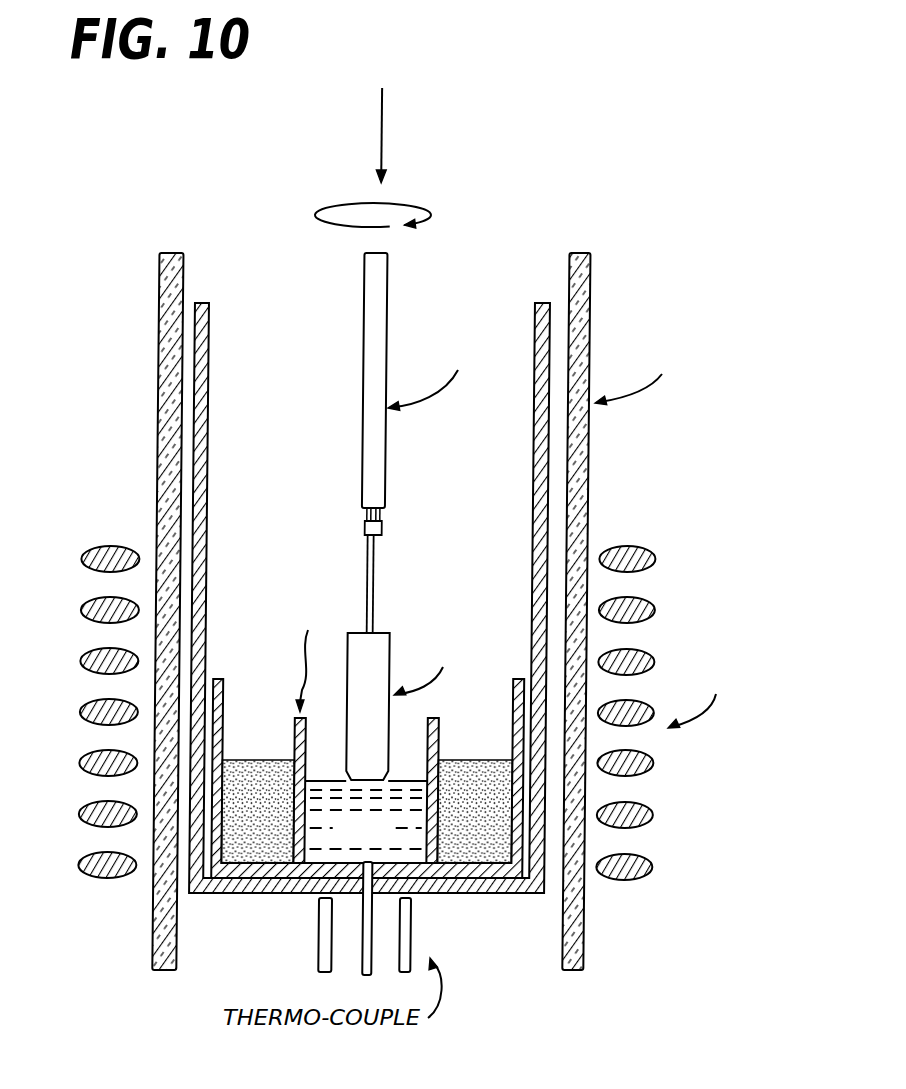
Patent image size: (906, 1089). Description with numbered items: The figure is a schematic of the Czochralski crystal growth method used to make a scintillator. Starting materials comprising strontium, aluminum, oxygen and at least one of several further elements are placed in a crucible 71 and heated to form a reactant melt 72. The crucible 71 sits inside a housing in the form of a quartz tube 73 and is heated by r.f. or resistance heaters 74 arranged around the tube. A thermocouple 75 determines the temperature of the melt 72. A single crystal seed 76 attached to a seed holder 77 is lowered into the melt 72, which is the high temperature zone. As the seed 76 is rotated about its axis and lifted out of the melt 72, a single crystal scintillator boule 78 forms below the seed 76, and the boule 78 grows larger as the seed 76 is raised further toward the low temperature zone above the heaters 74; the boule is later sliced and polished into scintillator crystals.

The crucible 71 is at (293, 733).
The reactant melt 72 is at (400, 843).
The quartz tube 73 is at (588, 297).
The r.f. or resistance heaters 74 is at (655, 552).
The thermocouple 75 is at (319, 946).
The single crystal seed 76 is at (376, 573).
The seed holder 77 is at (386, 445).
The single crystal scintillator boule 78 is at (386, 644).